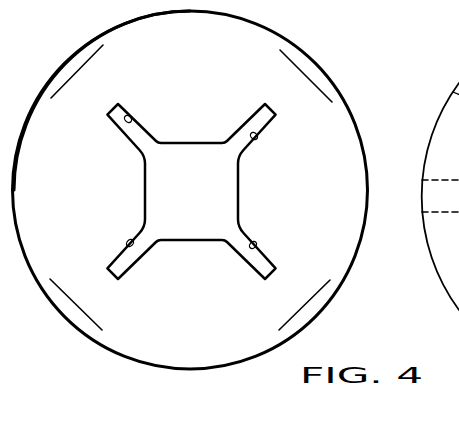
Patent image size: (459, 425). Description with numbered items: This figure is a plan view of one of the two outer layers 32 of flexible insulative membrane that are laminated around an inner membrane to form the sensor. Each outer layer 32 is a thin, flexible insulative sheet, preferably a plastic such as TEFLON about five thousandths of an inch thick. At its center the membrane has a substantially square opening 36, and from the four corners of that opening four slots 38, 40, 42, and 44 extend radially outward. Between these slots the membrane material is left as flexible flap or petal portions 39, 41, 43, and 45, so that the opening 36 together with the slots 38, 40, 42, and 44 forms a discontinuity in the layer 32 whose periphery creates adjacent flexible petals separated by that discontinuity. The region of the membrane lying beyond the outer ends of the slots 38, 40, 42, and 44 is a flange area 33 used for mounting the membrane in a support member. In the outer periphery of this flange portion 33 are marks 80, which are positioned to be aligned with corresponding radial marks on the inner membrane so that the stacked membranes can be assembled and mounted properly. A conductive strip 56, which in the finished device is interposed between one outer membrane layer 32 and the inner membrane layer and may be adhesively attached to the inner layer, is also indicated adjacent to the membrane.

The outer layer of flexible insulative membrane 32 is at (325, 70).
The flange area 33 is at (127, 37).
The substantially square opening 36 is at (191, 191).
The slot 38 is at (131, 117).
The flexible flap or petal portion 39 is at (209, 130).
The slot 40 is at (257, 136).
The flexible flap or petal portion 41 is at (291, 200).
The slot 42 is at (256, 243).
The flexible flap or petal portion 43 is at (209, 270).
The slot 44 is at (131, 241).
The flexible flap or petal portion 45 is at (121, 200).
The conductive strip 56 is at (458, 260).
The marks 80 is at (63, 86).